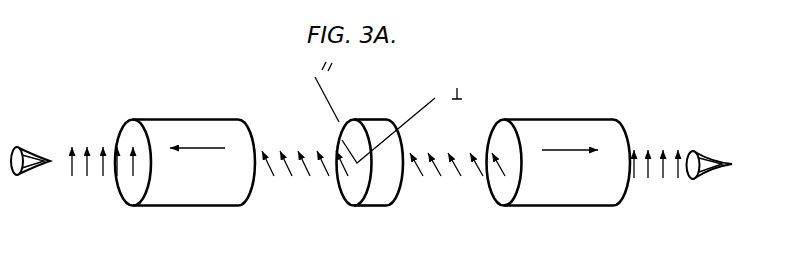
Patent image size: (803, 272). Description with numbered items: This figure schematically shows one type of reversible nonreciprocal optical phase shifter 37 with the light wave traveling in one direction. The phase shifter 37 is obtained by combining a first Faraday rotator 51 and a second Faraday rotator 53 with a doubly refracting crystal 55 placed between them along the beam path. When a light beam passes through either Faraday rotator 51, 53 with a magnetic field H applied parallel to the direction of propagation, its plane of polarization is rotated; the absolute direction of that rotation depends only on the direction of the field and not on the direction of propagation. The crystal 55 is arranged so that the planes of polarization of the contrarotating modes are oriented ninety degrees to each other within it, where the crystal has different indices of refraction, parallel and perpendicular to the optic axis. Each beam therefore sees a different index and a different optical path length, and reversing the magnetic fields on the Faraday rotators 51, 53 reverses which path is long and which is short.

The reversible nonreciprocal optical phase shifter 37 is at (409, 263).
The first Faraday rotator 51 is at (160, 130).
The second Faraday rotator 53 is at (595, 101).
The doubly refracting crystal 55 is at (373, 127).